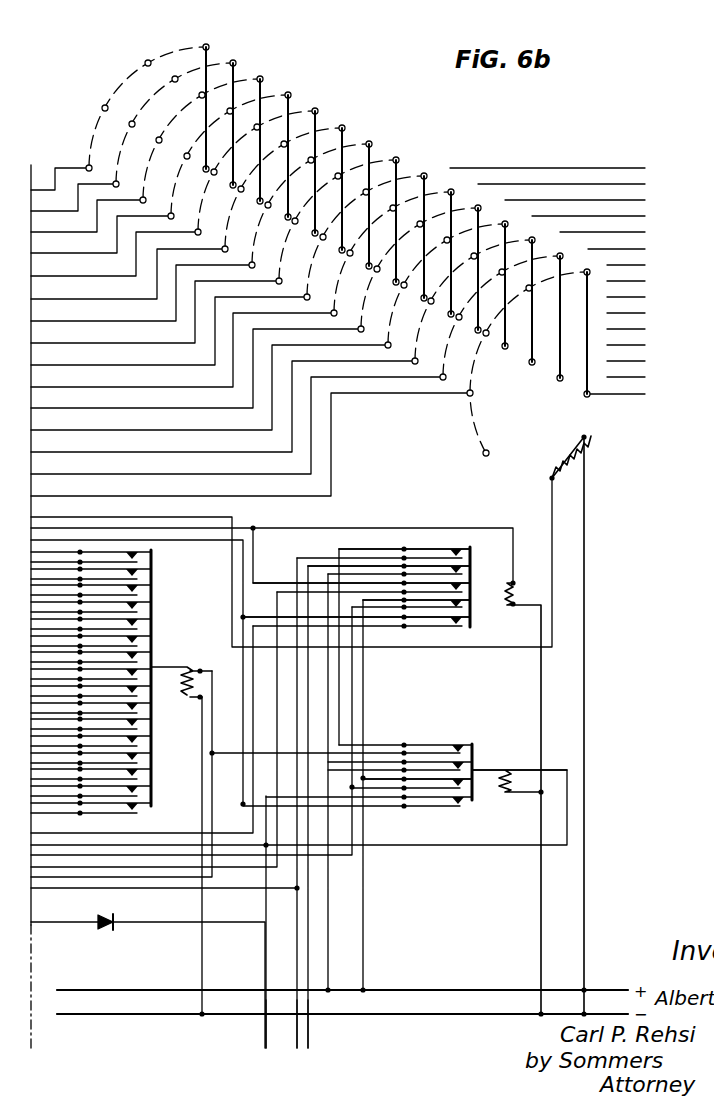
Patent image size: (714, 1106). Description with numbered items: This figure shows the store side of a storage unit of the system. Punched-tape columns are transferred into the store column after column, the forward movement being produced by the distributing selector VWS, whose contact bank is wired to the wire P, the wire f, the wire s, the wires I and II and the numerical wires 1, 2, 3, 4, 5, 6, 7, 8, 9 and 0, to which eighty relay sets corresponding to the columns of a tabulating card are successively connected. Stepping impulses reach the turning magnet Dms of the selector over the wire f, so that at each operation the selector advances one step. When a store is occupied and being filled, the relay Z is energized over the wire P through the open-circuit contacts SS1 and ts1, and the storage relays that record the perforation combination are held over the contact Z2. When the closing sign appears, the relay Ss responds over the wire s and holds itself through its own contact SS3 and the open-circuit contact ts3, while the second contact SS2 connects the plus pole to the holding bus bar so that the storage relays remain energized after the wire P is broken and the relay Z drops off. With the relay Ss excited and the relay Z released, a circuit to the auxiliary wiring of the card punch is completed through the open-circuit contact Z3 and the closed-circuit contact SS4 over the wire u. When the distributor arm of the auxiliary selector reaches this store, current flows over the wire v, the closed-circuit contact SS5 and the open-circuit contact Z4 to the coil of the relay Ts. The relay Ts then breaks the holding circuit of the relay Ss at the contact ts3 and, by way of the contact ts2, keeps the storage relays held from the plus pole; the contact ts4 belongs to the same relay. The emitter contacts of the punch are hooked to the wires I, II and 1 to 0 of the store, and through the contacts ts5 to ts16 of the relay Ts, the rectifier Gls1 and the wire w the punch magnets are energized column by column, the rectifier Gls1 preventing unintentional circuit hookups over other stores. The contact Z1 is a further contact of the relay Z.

The distributing selector VWS is at (292, 102).
The wire of the store detector P is at (344, 117).
The wire of the store detector f is at (343, 135).
The wire s is at (343, 154).
The wire I is at (342, 172).
The wire II is at (344, 192).
The numerical wire 1 is at (344, 212).
The numerical wire 2 is at (344, 231).
The numerical wire 3 is at (344, 250).
The numerical wire 4 is at (344, 269).
The numerical wire 5 is at (344, 288).
The numerical wire 6 is at (344, 306).
The numerical wire 7 is at (344, 325).
The numerical wire 8 is at (344, 344).
The numerical wire 9 is at (344, 363).
The numerical wire 0 is at (344, 382).
The turning magnet Dms is at (556, 465).
The closed-circuit contact SS5 is at (462, 548).
The closed-circuit contact SS4 is at (463, 568).
The holding contact SS3 is at (463, 585).
The second contact SS2 is at (463, 601).
The open-circuit contact SS1 is at (463, 628).
The relay Ss is at (509, 589).
The contact ts16 is at (111, 588).
The contact ts5 is at (140, 741).
The relay contact ts4 is at (140, 758).
The open-circuit contact ts3 is at (140, 775).
The contact ts2 is at (140, 792).
The open-circuit contact ts1 is at (140, 806).
The relay Ts is at (188, 668).
The open-circuit contact Z4 is at (463, 751).
The open-circuit contact Z3 is at (473, 768).
The contact Z2 is at (463, 787).
The relay contact Z1 is at (461, 800).
The relay Z is at (508, 792).
The rectifier Gls1 is at (110, 914).
The wire w is at (262, 1033).
The wire v is at (293, 1033).
The wire u is at (310, 1033).